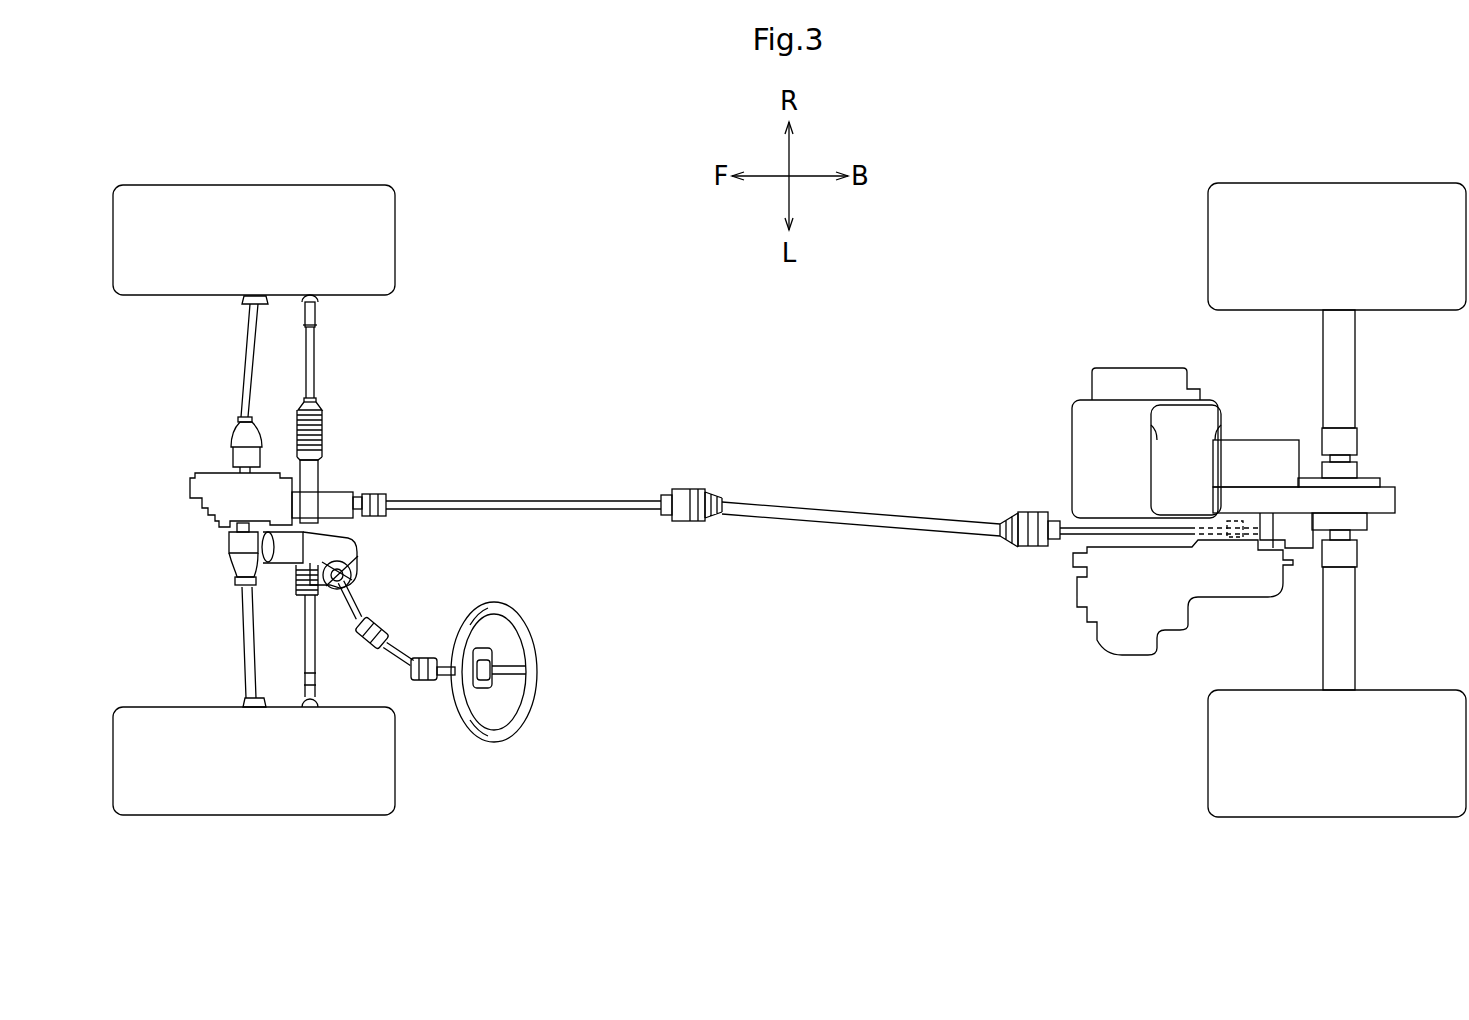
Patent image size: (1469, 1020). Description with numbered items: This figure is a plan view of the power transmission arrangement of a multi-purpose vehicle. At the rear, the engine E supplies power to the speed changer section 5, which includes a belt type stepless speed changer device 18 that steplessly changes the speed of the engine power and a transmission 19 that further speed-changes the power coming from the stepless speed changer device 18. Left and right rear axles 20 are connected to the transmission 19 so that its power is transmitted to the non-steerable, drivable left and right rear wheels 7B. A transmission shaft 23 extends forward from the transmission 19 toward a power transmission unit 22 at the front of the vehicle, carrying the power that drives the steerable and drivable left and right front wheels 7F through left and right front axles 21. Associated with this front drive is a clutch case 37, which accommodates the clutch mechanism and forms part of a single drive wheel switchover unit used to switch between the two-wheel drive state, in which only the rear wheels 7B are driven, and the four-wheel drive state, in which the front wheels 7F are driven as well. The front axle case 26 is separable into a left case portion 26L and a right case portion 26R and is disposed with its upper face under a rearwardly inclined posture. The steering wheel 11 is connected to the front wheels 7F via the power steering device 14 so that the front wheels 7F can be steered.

The front wheels 7F is at (262, 185).
The rear wheels 7B is at (1318, 188).
The front axles 21 is at (245, 371).
The front axle case 26 is at (179, 488).
The right case portion 26R is at (217, 470).
The left case portion 26L is at (200, 508).
The power transmission unit 22 is at (197, 527).
The power steering device 14 is at (318, 495).
The clutch case 37 is at (355, 497).
The transmission shaft 23 is at (566, 505).
The steering wheel 11 is at (530, 672).
The engine E is at (1075, 440).
The transmission 19 is at (1395, 500).
The speed changer section 5 is at (1390, 452).
The rear axles 20 is at (1357, 370).
The belt type stepless speed changer device 18 is at (1110, 655).